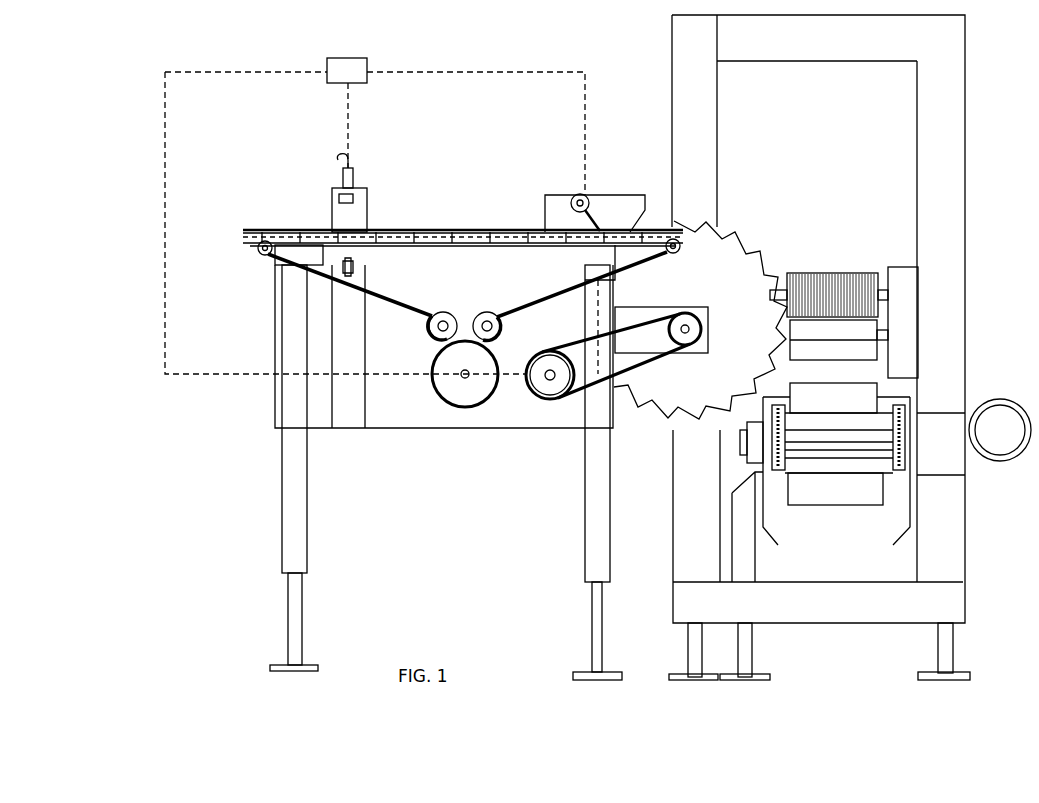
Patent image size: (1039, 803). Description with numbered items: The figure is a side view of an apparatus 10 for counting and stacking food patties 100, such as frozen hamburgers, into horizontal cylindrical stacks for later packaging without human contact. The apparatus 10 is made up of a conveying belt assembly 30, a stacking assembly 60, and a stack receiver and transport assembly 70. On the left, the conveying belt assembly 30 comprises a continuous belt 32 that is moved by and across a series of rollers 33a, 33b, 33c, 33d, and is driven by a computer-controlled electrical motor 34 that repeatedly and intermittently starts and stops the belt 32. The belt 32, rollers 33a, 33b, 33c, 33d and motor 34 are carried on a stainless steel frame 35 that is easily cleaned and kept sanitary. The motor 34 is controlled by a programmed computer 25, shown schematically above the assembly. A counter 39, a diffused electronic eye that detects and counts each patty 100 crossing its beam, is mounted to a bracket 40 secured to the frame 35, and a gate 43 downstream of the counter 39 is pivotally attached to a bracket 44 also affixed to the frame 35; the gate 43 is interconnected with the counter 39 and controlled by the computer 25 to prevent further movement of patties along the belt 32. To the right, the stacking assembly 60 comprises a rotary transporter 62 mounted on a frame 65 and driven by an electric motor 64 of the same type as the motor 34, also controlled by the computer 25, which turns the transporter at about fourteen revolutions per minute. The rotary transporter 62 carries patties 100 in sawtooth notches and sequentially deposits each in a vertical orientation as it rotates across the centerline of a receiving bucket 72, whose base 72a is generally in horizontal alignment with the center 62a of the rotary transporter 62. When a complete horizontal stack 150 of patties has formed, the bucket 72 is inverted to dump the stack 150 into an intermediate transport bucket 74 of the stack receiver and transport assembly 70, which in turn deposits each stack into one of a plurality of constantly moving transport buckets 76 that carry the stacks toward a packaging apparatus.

The apparatus 10 is at (577, 55).
The programmed computer 25 is at (338, 80).
The conveying belt assembly 30 is at (500, 148).
The belt 32 is at (372, 297).
The roller 33a is at (262, 255).
The roller 33b is at (675, 238).
The roller 33c is at (502, 327).
The roller 33d is at (437, 330).
The electrical motor 34 is at (452, 398).
The frame 35 is at (372, 410).
The counter 39 is at (350, 163).
The bracket 40 is at (340, 210).
The gate 43 is at (592, 212).
The bracket 44 is at (553, 203).
The stacking assembly 60 is at (758, 215).
The rotary transporter 62 is at (650, 415).
The center of rotary transporter 62a is at (697, 330).
The electric motor 64 is at (532, 396).
The frame 65 is at (690, 515).
The stack receiver and transport assembly 70 is at (843, 232).
The receiving bucket 72 is at (888, 300).
The base of bucket 72a is at (862, 350).
The intermediate transport bucket 74 is at (887, 362).
The transport bucket 76 is at (870, 395).
The food patty 100 is at (435, 230).
The horizontal stack of patties 150 is at (863, 272).